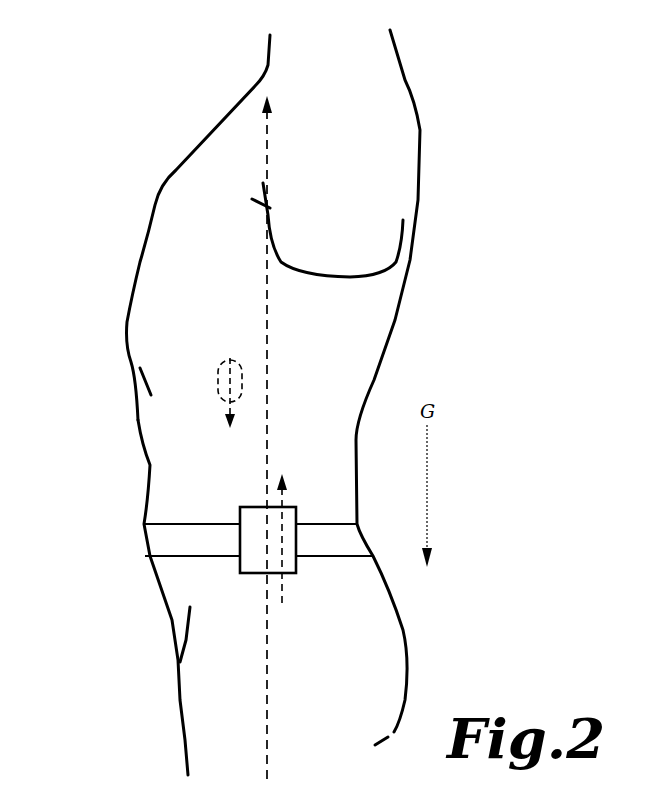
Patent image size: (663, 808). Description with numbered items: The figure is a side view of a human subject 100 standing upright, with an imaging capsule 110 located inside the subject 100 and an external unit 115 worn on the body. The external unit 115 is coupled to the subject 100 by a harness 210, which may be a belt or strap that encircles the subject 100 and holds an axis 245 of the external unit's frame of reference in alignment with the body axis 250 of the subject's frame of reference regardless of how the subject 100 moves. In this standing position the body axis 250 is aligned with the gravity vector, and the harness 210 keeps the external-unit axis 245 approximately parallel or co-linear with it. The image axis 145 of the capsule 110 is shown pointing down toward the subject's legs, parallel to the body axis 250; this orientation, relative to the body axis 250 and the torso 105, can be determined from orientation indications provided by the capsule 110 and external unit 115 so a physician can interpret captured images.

The human subject 100 is at (306, 398).
The torso 105 is at (168, 315).
The imaging capsule 110 is at (229, 360).
The image axis 145 is at (219, 381).
The body axis 250 is at (268, 380).
The harness 210 is at (180, 524).
The external unit 115 is at (266, 574).
The external-unit axis 245 is at (290, 598).